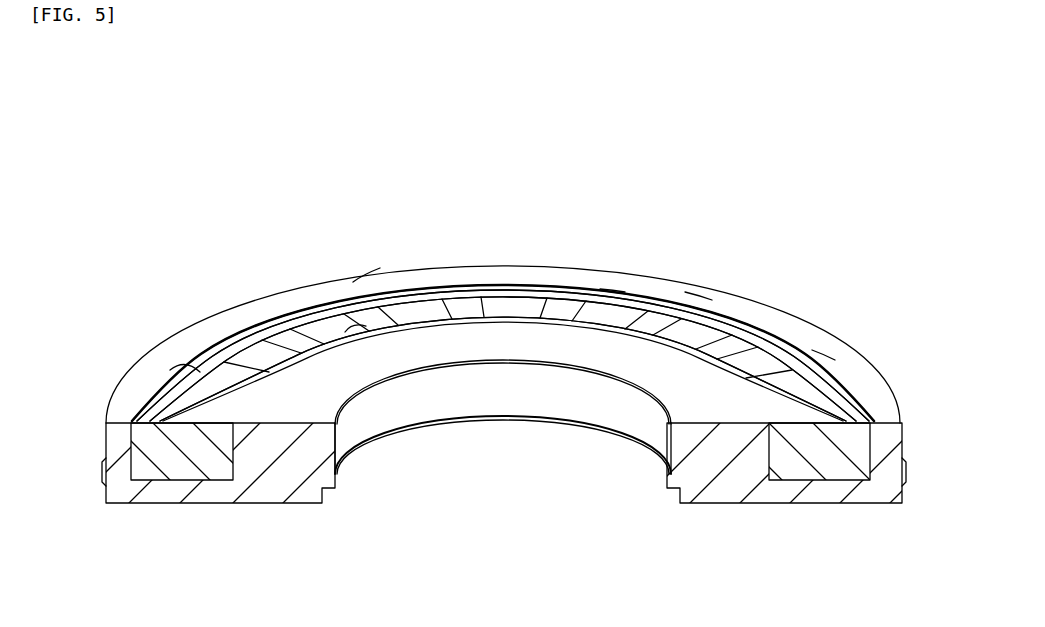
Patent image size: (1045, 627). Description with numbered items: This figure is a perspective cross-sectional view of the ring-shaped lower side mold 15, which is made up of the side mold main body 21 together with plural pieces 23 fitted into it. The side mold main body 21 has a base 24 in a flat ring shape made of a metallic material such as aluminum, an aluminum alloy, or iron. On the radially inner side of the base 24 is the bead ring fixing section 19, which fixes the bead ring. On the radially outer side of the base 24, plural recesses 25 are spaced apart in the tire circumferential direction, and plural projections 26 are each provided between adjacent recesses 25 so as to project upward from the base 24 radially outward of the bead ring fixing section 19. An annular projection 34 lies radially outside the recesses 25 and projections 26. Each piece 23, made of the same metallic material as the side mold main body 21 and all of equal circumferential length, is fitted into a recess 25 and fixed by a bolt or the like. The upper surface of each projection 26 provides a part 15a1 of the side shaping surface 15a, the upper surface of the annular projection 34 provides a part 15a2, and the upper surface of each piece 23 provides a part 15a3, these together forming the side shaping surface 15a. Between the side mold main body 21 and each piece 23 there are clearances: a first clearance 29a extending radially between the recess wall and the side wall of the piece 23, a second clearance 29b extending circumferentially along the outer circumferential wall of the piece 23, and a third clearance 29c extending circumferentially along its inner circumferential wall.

The lower side mold 15 is at (516, 51).
The side shaping surface 15a is at (760, 322).
The part of the side shaping surface 15a1 is at (362, 290).
The part of the side shaping surface 15a2 is at (698, 296).
The part of the side shaping surface 15a3 is at (612, 292).
The bead ring fixing section 19 is at (602, 348).
The side mold main body 21 is at (207, 520).
The piece 23 is at (322, 314).
The base 24 is at (372, 428).
The recess 25 is at (862, 482).
The projection 26 is at (172, 412).
The first clearance 29a is at (528, 150).
The second clearance 29b is at (190, 376).
The third clearance 29c is at (352, 328).
The annular projection 34 is at (822, 342).